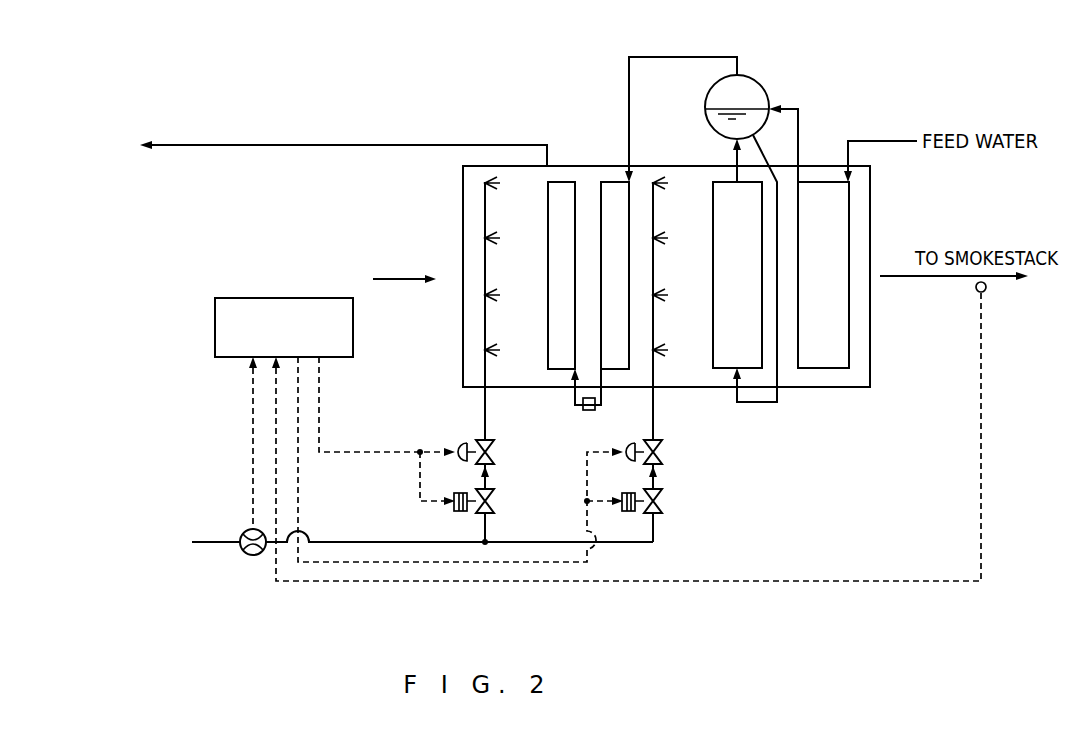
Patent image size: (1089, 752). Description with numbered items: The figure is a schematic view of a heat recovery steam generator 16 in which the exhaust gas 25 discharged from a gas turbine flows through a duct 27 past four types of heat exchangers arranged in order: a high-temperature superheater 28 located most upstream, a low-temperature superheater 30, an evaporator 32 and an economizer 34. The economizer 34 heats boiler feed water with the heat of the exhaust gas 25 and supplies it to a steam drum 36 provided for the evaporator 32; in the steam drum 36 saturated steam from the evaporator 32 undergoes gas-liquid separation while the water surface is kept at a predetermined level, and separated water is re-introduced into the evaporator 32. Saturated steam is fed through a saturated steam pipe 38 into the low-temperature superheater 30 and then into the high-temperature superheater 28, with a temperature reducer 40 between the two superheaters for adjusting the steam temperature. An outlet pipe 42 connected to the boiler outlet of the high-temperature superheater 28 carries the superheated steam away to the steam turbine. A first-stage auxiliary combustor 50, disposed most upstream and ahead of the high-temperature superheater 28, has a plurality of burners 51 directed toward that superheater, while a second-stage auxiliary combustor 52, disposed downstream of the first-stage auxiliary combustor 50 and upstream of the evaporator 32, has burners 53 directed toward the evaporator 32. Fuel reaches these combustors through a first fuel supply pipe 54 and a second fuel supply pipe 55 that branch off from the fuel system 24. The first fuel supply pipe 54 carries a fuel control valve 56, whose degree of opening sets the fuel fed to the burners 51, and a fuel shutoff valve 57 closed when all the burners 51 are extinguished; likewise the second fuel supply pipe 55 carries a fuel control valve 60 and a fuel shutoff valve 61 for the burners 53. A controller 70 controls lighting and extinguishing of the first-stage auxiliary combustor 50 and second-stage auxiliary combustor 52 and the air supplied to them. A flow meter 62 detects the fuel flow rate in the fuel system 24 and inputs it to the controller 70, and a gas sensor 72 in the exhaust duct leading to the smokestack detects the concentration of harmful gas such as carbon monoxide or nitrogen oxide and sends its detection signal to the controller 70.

The heat recovery steam generator 16 is at (813, 400).
The fuel system 24 is at (363, 541).
The exhaust gas 25 is at (400, 282).
The duct 27 is at (660, 164).
The high-temperature superheater 28 is at (565, 179).
The low-temperature superheater 30 is at (613, 179).
The evaporator 32 is at (711, 259).
The economizer 34 is at (849, 213).
The steam drum 36 is at (760, 84).
The saturated steam pipe 38 is at (658, 57).
The temperature reducer 40 is at (583, 408).
The outlet pipe 42 is at (450, 143).
The first-stage auxiliary combustor 50 is at (487, 210).
The burners 51 is at (490, 299).
The second-stage auxiliary combustor 52 is at (655, 210).
The burners 53 is at (658, 299).
The first fuel supply pipe 54 is at (483, 415).
The second fuel supply pipe 55 is at (656, 407).
The fuel control valve 56 is at (496, 453).
The fuel shutoff valve 57 is at (496, 504).
The fuel control valve 60 is at (664, 453).
The fuel shutoff valve 61 is at (664, 504).
The flow meter 62 is at (253, 556).
The controller 70 is at (277, 297).
The gas sensor 72 is at (986, 291).